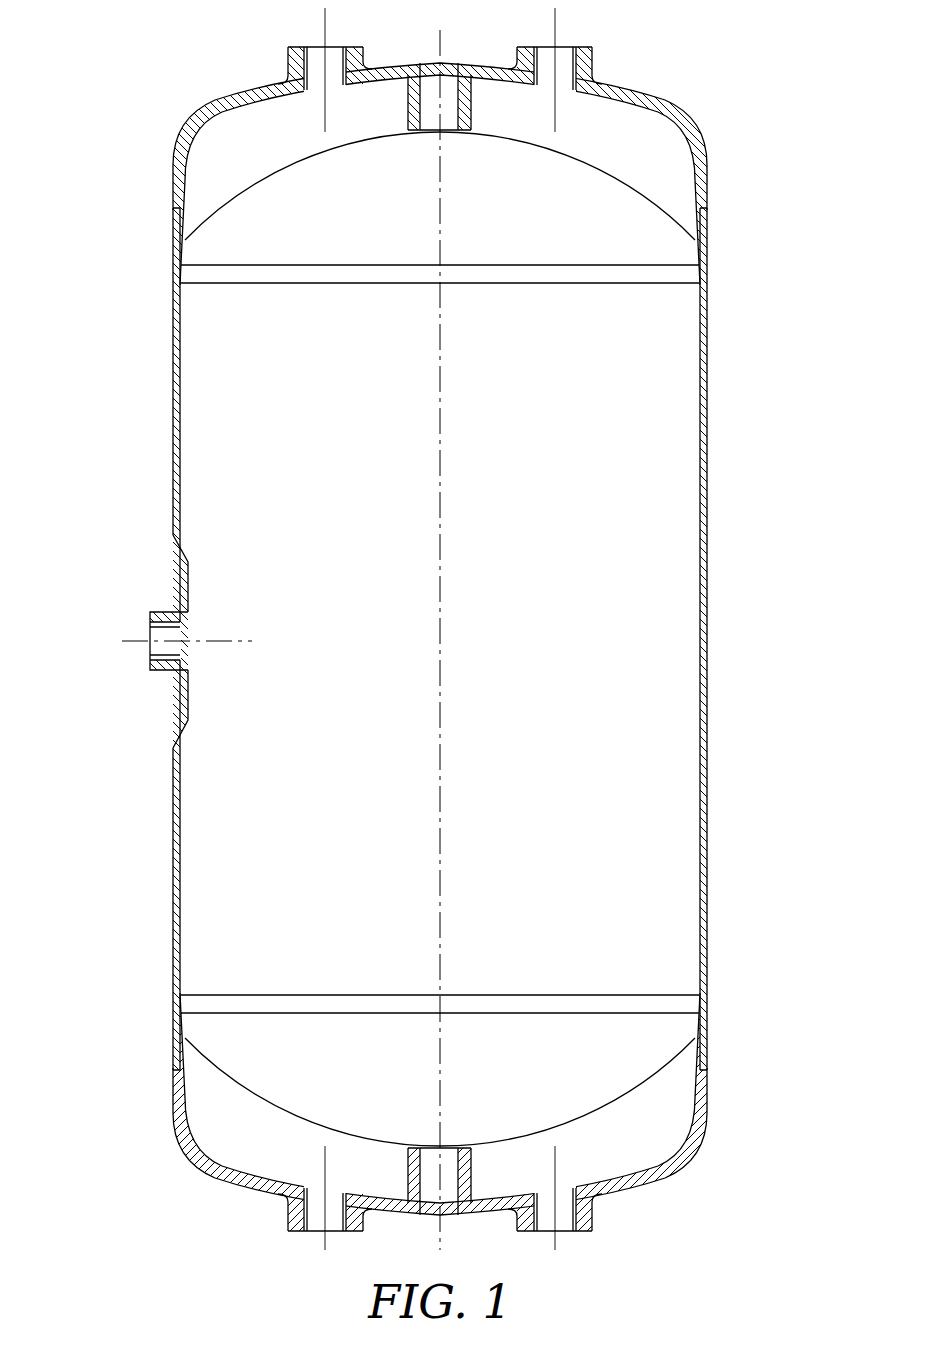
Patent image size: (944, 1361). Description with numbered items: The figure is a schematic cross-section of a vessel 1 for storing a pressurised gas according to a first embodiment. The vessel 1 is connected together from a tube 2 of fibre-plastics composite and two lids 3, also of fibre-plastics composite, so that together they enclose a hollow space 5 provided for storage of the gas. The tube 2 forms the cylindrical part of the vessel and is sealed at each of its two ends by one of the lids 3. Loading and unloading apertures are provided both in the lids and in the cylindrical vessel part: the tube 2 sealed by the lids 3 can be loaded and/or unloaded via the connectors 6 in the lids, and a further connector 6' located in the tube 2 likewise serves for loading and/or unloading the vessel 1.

The vessel 1 is at (379, 638).
The tube 2 is at (176, 815).
The lid 3 is at (176, 162).
The hollow space 5 is at (243, 937).
The connector 6 is at (430, 638).
The further connector 6' is at (160, 641).